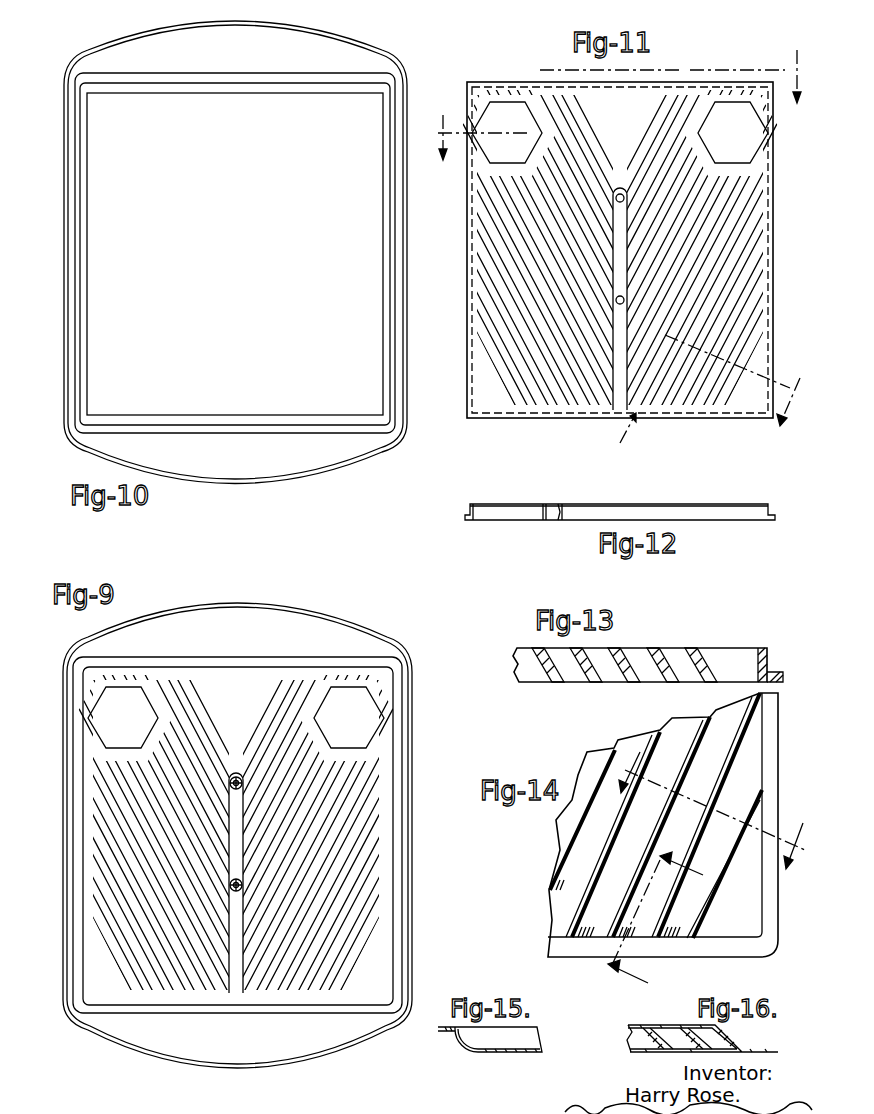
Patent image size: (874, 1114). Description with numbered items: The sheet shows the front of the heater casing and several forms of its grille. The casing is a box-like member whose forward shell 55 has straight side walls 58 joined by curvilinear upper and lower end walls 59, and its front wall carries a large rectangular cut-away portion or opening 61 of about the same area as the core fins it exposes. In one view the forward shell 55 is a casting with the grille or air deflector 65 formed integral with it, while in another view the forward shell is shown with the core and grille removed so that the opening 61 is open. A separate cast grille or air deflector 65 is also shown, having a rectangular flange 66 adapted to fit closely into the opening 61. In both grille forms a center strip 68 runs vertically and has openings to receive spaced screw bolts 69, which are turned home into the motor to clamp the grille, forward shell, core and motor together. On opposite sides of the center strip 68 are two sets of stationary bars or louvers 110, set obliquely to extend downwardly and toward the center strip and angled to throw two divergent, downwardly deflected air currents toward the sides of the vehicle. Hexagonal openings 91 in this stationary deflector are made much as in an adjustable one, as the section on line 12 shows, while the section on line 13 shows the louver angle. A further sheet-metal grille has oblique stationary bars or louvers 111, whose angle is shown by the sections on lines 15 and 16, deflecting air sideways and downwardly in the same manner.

In FIG. 10, the forward shell 55 is at (362, 58).
In FIG. 9, the forward shell 55 is at (364, 637).
In FIG. 10, the straight side walls 58 is at (64, 332).
In FIG. 9, the straight side walls 58 is at (65, 793).
In FIG. 10, the curvilinear upper and lower end walls 59 is at (125, 46).
In FIG. 9, the curvilinear upper and lower end walls 59 is at (263, 603).
In FIG. 10, the rectangular cut-away portion or opening 61 is at (88, 184).
In FIG. 11, the grille or air deflector 65 is at (760, 165).
In FIG. 12, the grille or air deflector 65 is at (758, 521).
In FIG. 13, the grille or air deflector 65 is at (780, 683).
In FIG. 14, the grille or air deflector 65 is at (775, 766).
In FIG. 9, the grille or air deflector 65 is at (380, 815).
In FIG. 11, the rectangular flange 66 is at (512, 87).
In FIG. 12, the rectangular flange 66 is at (470, 512).
In FIG. 13, the rectangular flange 66 is at (770, 660).
In FIG. 11, the center strip 68 is at (620, 384).
In FIG. 9, the center strip 68 is at (229, 906).
In FIG. 9, the screw bolts 69 is at (237, 799).
In FIG. 11, the hexagonal openings 91 is at (485, 153).
In FIG. 12, the hexagonal openings 91 is at (515, 515).
In FIG. 9, the hexagonal openings 91 is at (238, 716).
In FIG. 11, the stationary bars or louvers 110 is at (725, 293).
In FIG. 13, the stationary bars or louvers 110 is at (686, 650).
In FIG. 9, the stationary bars or louvers 110 is at (303, 748).
In FIG. 14, the stationary bars or louvers 111 is at (662, 895).
In FIG. 15, the stationary bars or louvers 111 is at (492, 1056).
In FIG. 16, the stationary bars or louvers 111 is at (628, 1040).
In FIG. 11, the section line 12— 12 is at (619, 96).
In FIG. 11, the section line 13— 13 is at (705, 394).
In FIG. 14, the section line 15— 15 is at (646, 911).
In FIG. 14, the section line 16— 16 is at (710, 810).